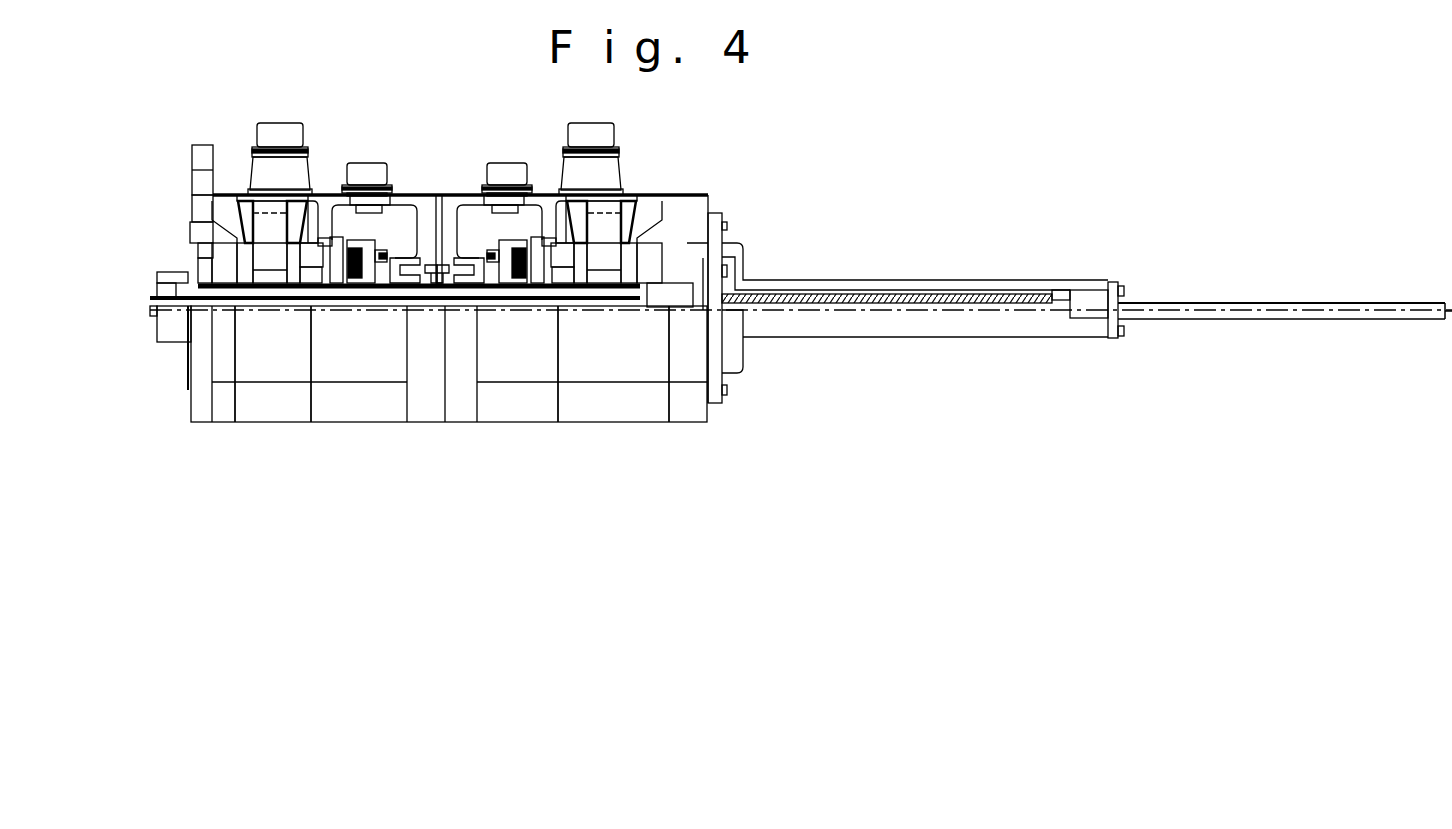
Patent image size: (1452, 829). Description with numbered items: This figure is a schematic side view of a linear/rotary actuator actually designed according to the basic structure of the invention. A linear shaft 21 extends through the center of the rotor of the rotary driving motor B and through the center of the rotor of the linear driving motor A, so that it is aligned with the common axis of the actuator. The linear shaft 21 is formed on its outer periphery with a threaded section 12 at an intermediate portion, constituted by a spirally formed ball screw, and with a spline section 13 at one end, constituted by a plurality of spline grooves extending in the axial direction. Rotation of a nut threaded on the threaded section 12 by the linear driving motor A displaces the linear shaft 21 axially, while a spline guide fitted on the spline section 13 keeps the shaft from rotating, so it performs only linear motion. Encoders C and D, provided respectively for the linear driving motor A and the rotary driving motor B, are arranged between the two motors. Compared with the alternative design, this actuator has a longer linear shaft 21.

The threaded section 12 is at (923, 303).
The spline section 13 is at (1233, 304).
The linear shaft 21 is at (1135, 298).
The linear driving motor A is at (605, 408).
The rotary driving motor B is at (265, 408).
The encoder C is at (512, 408).
The encoder D is at (355, 408).